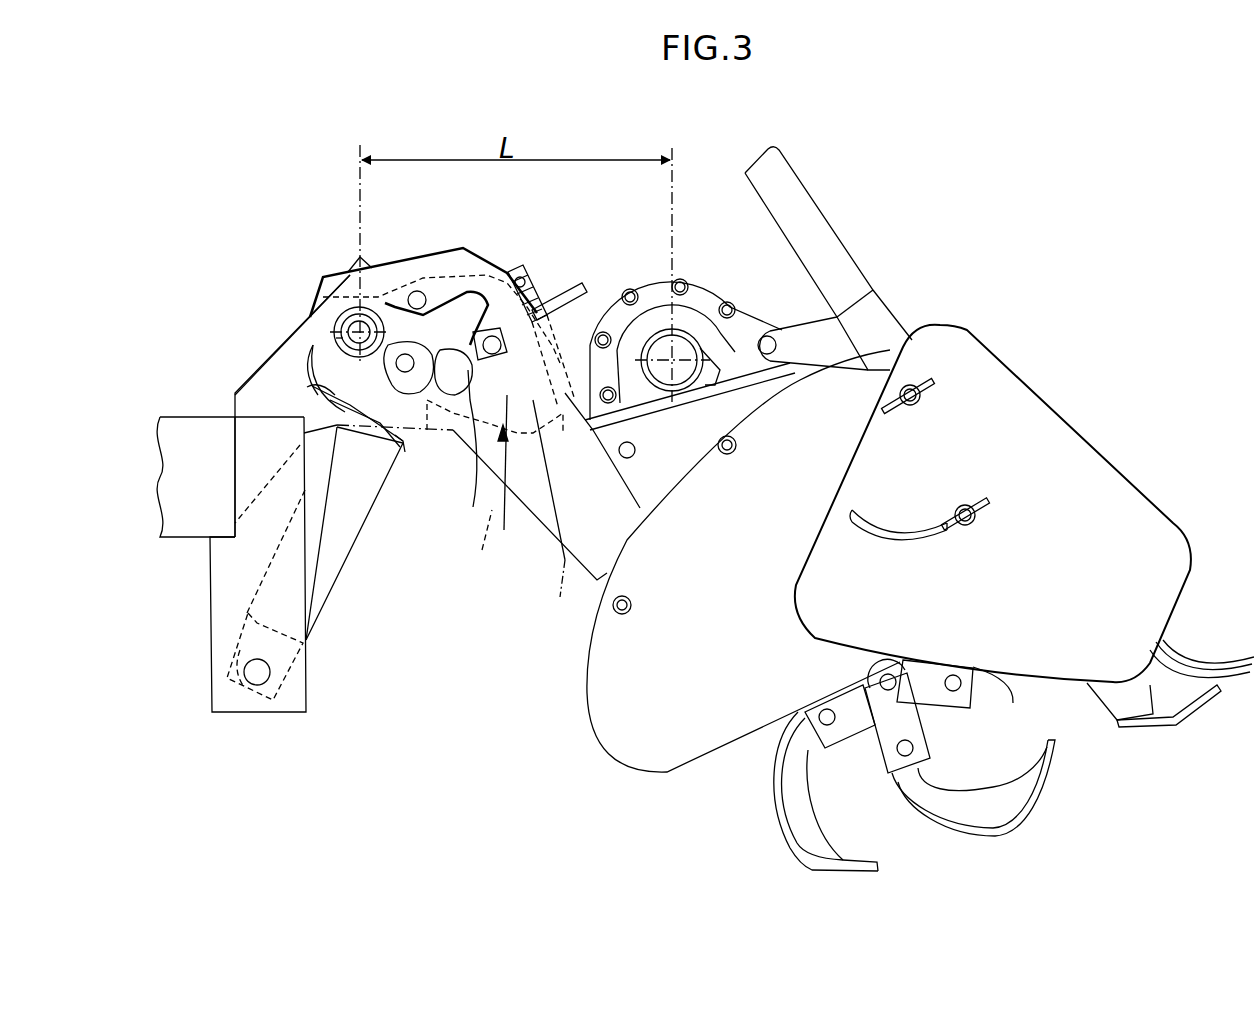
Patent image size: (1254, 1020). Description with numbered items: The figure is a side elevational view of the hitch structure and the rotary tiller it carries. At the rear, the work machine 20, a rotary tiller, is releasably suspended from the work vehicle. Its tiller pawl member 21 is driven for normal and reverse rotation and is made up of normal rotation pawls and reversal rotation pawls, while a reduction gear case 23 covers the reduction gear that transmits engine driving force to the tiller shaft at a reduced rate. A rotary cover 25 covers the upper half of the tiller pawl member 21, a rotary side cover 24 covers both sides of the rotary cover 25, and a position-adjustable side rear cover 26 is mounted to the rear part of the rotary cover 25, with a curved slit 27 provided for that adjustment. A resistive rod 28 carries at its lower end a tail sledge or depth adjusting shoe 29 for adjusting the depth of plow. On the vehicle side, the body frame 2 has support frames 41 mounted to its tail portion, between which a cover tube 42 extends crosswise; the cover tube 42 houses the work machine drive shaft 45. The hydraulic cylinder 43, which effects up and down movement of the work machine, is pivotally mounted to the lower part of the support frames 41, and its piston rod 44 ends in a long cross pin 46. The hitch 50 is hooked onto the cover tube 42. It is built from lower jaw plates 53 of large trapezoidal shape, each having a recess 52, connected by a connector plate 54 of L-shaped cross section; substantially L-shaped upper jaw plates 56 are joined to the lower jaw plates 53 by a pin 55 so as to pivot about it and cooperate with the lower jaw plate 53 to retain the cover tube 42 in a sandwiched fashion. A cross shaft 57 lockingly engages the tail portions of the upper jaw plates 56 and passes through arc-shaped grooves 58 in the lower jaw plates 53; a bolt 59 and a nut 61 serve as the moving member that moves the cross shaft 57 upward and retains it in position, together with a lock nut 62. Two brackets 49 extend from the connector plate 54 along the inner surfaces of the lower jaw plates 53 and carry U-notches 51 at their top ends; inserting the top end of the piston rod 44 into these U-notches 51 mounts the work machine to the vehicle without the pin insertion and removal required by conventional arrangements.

The vehicle body frame 2 is at (193, 530).
The work machine 20 is at (1013, 311).
The tiller pawl member 21 is at (857, 863).
The reduction gear case 23 is at (708, 290).
The rotary side cover 24 is at (693, 702).
The rotary cover 25 is at (597, 737).
The side rear cover 26 is at (1100, 453).
The curved slit 27 is at (900, 520).
The resistive rod 28 is at (815, 206).
The depth adjusting shoe 29 is at (1170, 722).
The support frames 41 is at (268, 363).
The cover tube 42 is at (340, 327).
The hydraulic cylinder 43 is at (338, 580).
The piston rod 44 is at (410, 438).
The work machine drive shaft 45 is at (343, 338).
The long cross pin 46 is at (307, 387).
The brackets 49 is at (477, 553).
The hitch 50 is at (411, 246).
The U-notches 51 is at (405, 447).
The recess 52 is at (345, 317).
The lower jaw plates 53 is at (548, 530).
The connector plate 54 is at (562, 593).
The pin 55 is at (432, 290).
The upper jaw plates 56 is at (441, 250).
The cross shaft 57 is at (508, 478).
The arc-shaped grooves 58 is at (472, 453).
The bolt 59 is at (583, 285).
The nut 61 is at (521, 275).
The lock nut 62 is at (548, 300).